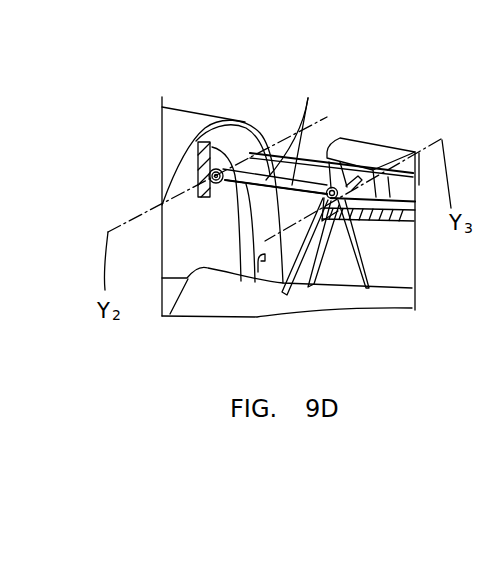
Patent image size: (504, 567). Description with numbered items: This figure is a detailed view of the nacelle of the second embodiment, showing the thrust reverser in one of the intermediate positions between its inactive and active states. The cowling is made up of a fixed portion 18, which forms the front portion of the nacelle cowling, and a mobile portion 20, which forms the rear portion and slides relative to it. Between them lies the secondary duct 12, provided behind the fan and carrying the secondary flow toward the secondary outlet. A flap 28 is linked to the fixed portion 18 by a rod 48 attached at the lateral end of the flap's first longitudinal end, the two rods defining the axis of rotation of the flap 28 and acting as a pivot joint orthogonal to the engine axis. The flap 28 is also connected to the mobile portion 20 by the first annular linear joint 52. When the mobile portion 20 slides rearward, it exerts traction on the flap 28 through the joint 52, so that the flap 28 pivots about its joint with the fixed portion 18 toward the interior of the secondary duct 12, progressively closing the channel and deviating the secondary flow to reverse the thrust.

The secondary duct 12 is at (402, 268).
The fixed portion 18 is at (183, 104).
The mobile portion 20 is at (392, 143).
The flap 28 is at (316, 280).
The rod 48 is at (308, 97).
The first annular linear joint 52 is at (367, 290).